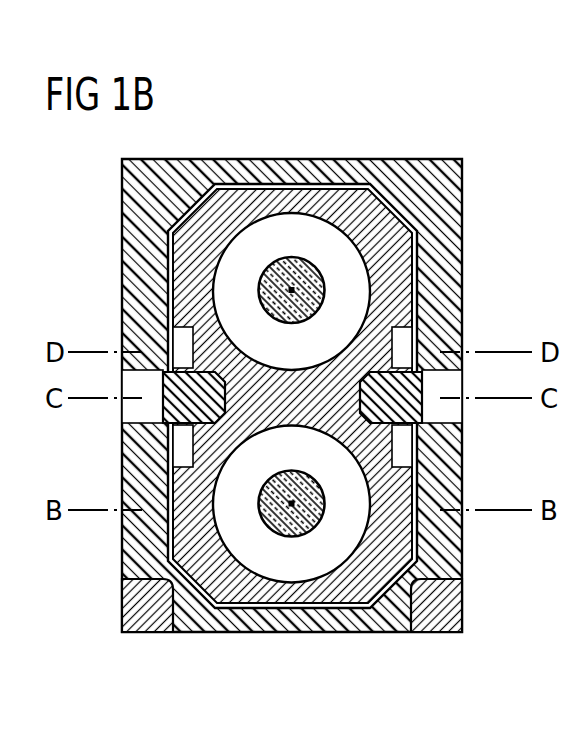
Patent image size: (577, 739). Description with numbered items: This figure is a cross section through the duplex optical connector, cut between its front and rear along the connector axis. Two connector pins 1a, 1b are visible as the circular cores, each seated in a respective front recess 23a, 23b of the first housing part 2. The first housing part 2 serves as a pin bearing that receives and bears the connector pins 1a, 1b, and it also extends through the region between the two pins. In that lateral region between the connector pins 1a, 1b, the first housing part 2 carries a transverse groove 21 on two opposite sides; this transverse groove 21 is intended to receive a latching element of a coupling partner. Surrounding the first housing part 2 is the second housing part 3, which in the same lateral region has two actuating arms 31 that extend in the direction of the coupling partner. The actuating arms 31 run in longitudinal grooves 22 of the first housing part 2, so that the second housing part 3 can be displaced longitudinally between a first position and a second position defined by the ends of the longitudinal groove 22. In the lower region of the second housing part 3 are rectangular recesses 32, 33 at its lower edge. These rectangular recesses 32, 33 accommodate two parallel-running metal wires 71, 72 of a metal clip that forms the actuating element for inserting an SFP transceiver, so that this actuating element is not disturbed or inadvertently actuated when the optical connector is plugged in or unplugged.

The connector pin 1a is at (292, 268).
The connector pin 1b is at (292, 523).
The front recess 23a is at (290, 220).
The front recess 23b is at (291, 574).
The first housing part 2 is at (352, 205).
The second housing part 3 is at (405, 173).
The transverse groove 21 is at (400, 350).
The longitudinal groove 22 is at (398, 433).
The actuating arm 31 is at (405, 398).
The rectangular recess 32 is at (170, 610).
The rectangular recess 33 is at (412, 632).
The metal wire 71 is at (438, 622).
The metal wire 72 is at (150, 612).